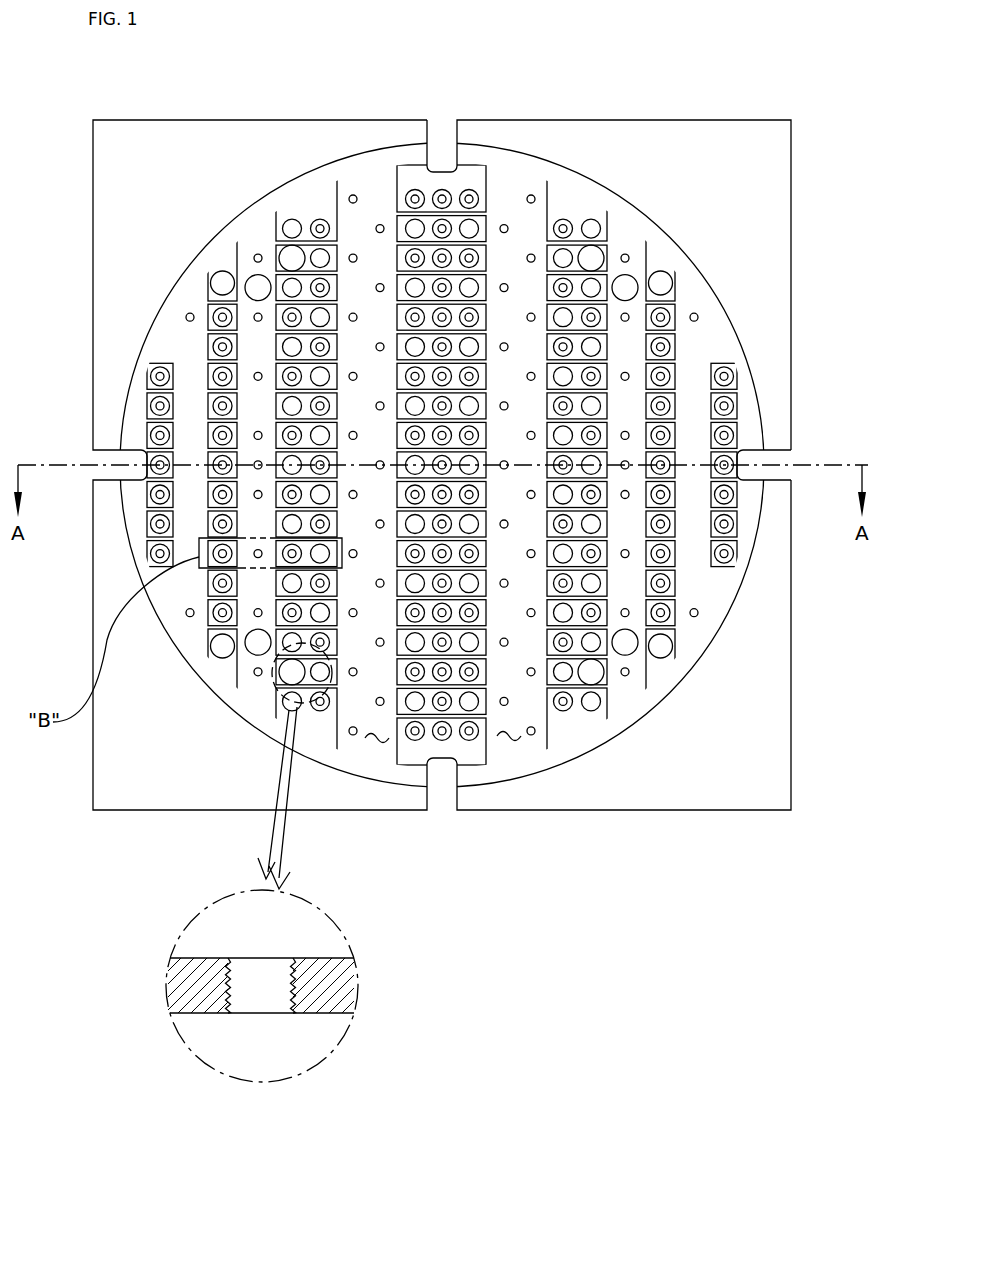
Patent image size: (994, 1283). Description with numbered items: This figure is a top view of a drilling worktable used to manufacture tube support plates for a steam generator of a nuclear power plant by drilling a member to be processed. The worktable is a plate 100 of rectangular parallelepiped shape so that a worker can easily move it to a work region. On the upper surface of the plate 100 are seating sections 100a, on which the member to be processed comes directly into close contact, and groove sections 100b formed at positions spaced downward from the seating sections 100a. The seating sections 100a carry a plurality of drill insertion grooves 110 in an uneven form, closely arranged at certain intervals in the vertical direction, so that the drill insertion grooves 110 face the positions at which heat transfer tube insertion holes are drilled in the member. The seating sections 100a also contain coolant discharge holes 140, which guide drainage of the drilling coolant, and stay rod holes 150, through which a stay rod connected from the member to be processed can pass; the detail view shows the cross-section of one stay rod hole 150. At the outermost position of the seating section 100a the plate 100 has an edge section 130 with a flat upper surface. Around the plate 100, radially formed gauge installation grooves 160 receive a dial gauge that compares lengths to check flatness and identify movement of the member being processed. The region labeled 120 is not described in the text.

The plate 100 is at (722, 120).
The seating section 100a is at (676, 613).
The groove section 100b is at (507, 740).
The drill insertion groove 110 is at (292, 219).
The block 120 is at (207, 338).
The edge section 130 is at (112, 322).
The coolant discharge hole 140 is at (320, 219).
The stay rod hole 150 is at (292, 672).
The gauge installation groove 160 is at (737, 462).